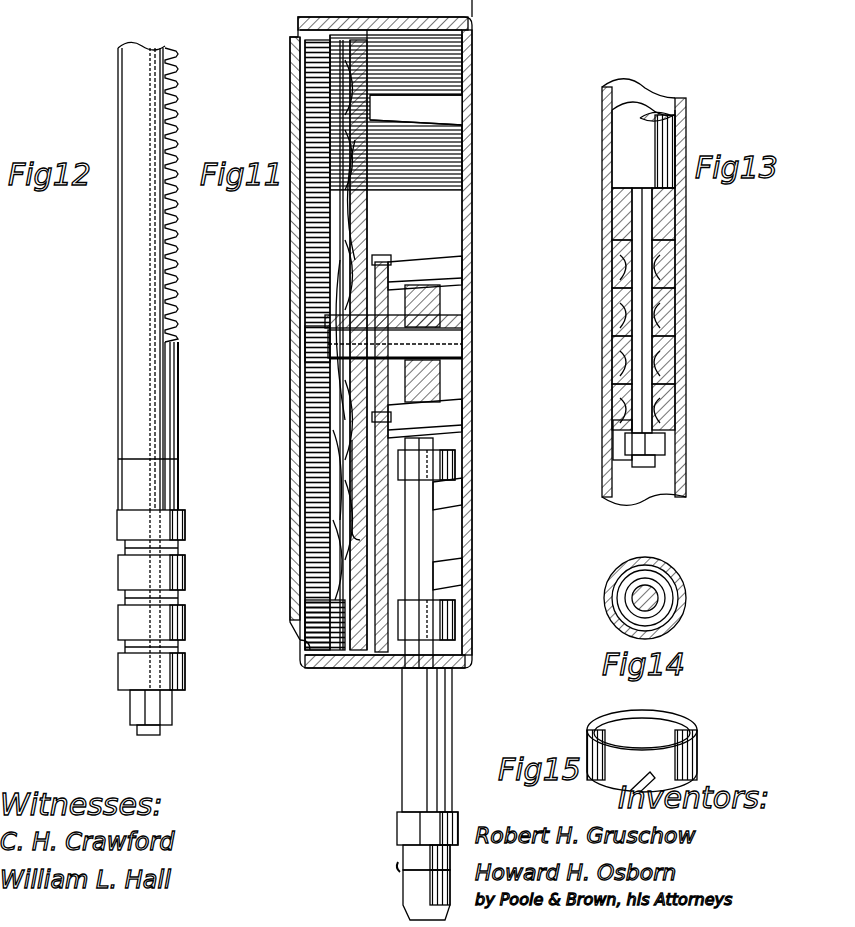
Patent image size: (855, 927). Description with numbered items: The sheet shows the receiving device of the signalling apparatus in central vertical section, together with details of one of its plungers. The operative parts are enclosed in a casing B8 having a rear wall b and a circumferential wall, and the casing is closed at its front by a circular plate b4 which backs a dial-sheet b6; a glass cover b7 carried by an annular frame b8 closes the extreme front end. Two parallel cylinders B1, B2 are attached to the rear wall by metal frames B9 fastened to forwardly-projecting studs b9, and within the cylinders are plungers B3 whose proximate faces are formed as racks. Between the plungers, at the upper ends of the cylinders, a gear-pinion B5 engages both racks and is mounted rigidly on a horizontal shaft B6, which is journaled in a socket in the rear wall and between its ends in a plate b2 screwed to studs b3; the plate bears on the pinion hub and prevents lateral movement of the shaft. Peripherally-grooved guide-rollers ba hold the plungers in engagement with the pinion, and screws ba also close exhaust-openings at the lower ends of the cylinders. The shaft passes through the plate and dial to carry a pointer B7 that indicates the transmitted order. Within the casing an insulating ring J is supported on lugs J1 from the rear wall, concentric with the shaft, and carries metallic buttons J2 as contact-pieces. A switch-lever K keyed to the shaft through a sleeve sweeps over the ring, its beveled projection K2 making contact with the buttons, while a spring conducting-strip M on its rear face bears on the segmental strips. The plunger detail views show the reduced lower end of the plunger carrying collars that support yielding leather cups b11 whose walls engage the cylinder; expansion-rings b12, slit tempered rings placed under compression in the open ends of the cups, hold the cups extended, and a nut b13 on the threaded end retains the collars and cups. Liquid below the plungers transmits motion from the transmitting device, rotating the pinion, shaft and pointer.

In FIG. 11, the casing B is at (465, 228).
In FIG. 11, the rear wall b is at (478, 195).
In FIG. 13, the cylinder B1 is at (688, 115).
In FIG. 14, the cylinder B1 is at (660, 582).
In FIG. 11, the cylinder B2 is at (415, 735).
In FIG. 12, the plunger B3 is at (132, 238).
In FIG. 13, the plunger B3 is at (640, 135).
In FIG. 14, the plunger B3 is at (635, 603).
In FIG. 11, the gear-pinion B5 is at (430, 300).
In FIG. 11, the horizontal shaft B6 is at (450, 338).
In FIG. 11, the pointer B7 is at (345, 448).
In FIG. 11, the casing B8 is at (470, 125).
In FIG. 11, the metal frame B9 is at (430, 530).
In FIG. 11, the plate b2 is at (380, 260).
In FIG. 11, the stud b3 is at (425, 265).
In FIG. 11, the circular plate b4 is at (325, 255).
In FIG. 11, the dial-sheet b6 is at (320, 276).
In FIG. 11, the glass cover b7 is at (300, 520).
In FIG. 11, the annular frame b8 is at (300, 650).
In FIG. 11, the stud b9 is at (450, 492).
In FIG. 12, the yielding cup b11 is at (130, 665).
In FIG. 13, the yielding cup b11 is at (680, 400).
In FIG. 14, the yielding cup b11 is at (665, 600).
In FIG. 13, the expansion-ring b12 is at (620, 420).
In FIG. 14, the expansion-ring b12 is at (668, 590).
In FIG. 15, the expansion-ring b12 is at (690, 740).
In FIG. 12, the nut b13 is at (140, 712).
In FIG. 13, the nut b13 is at (655, 447).
In FIG. 11, the guide-roller / exhaust screw ba is at (400, 868).
In FIG. 11, the ring J is at (358, 500).
In FIG. 11, the lug J1 is at (455, 105).
In FIG. 11, the metallic button J2 is at (350, 240).
In FIG. 11, the switch-lever K is at (335, 305).
In FIG. 11, the projection K2 is at (320, 605).
In FIG. 11, the conducting-strip M is at (365, 485).